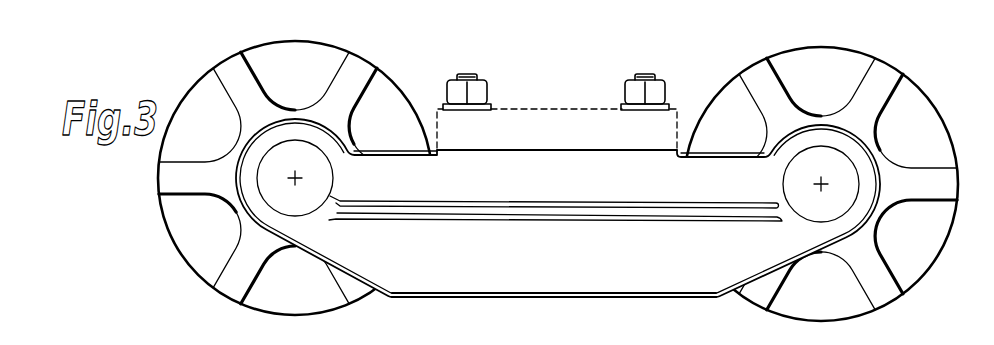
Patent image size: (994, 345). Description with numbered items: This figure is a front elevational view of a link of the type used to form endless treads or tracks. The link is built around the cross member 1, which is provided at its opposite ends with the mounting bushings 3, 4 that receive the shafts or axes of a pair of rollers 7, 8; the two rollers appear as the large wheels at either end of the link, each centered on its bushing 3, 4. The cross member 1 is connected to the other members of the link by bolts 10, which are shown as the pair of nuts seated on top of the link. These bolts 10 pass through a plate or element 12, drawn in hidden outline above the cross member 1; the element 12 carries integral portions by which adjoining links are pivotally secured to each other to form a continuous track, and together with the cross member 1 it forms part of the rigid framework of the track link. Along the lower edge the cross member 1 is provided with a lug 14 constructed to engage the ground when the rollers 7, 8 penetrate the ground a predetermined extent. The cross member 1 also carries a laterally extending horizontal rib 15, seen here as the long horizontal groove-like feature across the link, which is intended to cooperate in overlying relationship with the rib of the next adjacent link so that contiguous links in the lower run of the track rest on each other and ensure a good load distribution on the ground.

The cross member 1 is at (523, 183).
The mounting bushing 3 is at (260, 150).
The mounting bushing 4 is at (855, 157).
The roller 7 is at (203, 258).
The roller 8 is at (873, 282).
The bolt 10 is at (453, 95).
The plate or element 12 is at (597, 125).
The lug 14 is at (603, 267).
The horizontal rib 15 is at (383, 207).